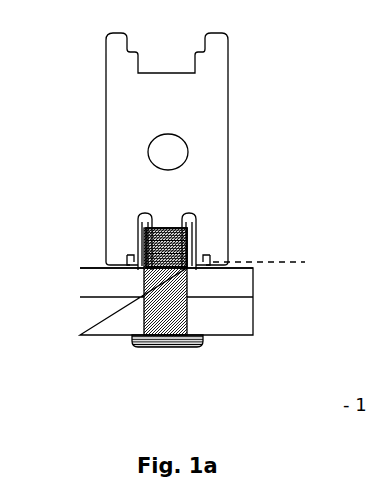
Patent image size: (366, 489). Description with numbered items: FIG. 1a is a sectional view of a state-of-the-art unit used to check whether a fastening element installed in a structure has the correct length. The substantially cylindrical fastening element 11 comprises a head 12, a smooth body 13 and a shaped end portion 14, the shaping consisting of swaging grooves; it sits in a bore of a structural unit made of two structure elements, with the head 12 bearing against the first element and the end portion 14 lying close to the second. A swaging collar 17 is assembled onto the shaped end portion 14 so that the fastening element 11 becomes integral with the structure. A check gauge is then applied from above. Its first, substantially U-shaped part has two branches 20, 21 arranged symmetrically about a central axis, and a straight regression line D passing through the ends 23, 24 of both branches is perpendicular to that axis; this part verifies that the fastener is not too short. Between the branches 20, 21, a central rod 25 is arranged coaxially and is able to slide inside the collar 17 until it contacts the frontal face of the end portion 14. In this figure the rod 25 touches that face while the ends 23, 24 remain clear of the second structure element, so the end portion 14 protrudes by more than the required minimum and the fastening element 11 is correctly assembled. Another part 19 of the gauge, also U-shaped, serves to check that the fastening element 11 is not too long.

The fastening element 11 is at (133, 352).
The head 12 is at (180, 348).
The smooth body 13 is at (157, 308).
The shaped end portion 14 is at (202, 250).
The swaging collar 17 is at (193, 265).
The part of the gauge 19 is at (118, 73).
The branch 20 is at (110, 253).
The branch 21 is at (220, 258).
The end of branch 23 is at (100, 276).
The end of branch 24 is at (213, 275).
The central rod 25 is at (140, 222).
The straight regression line D is at (303, 262).